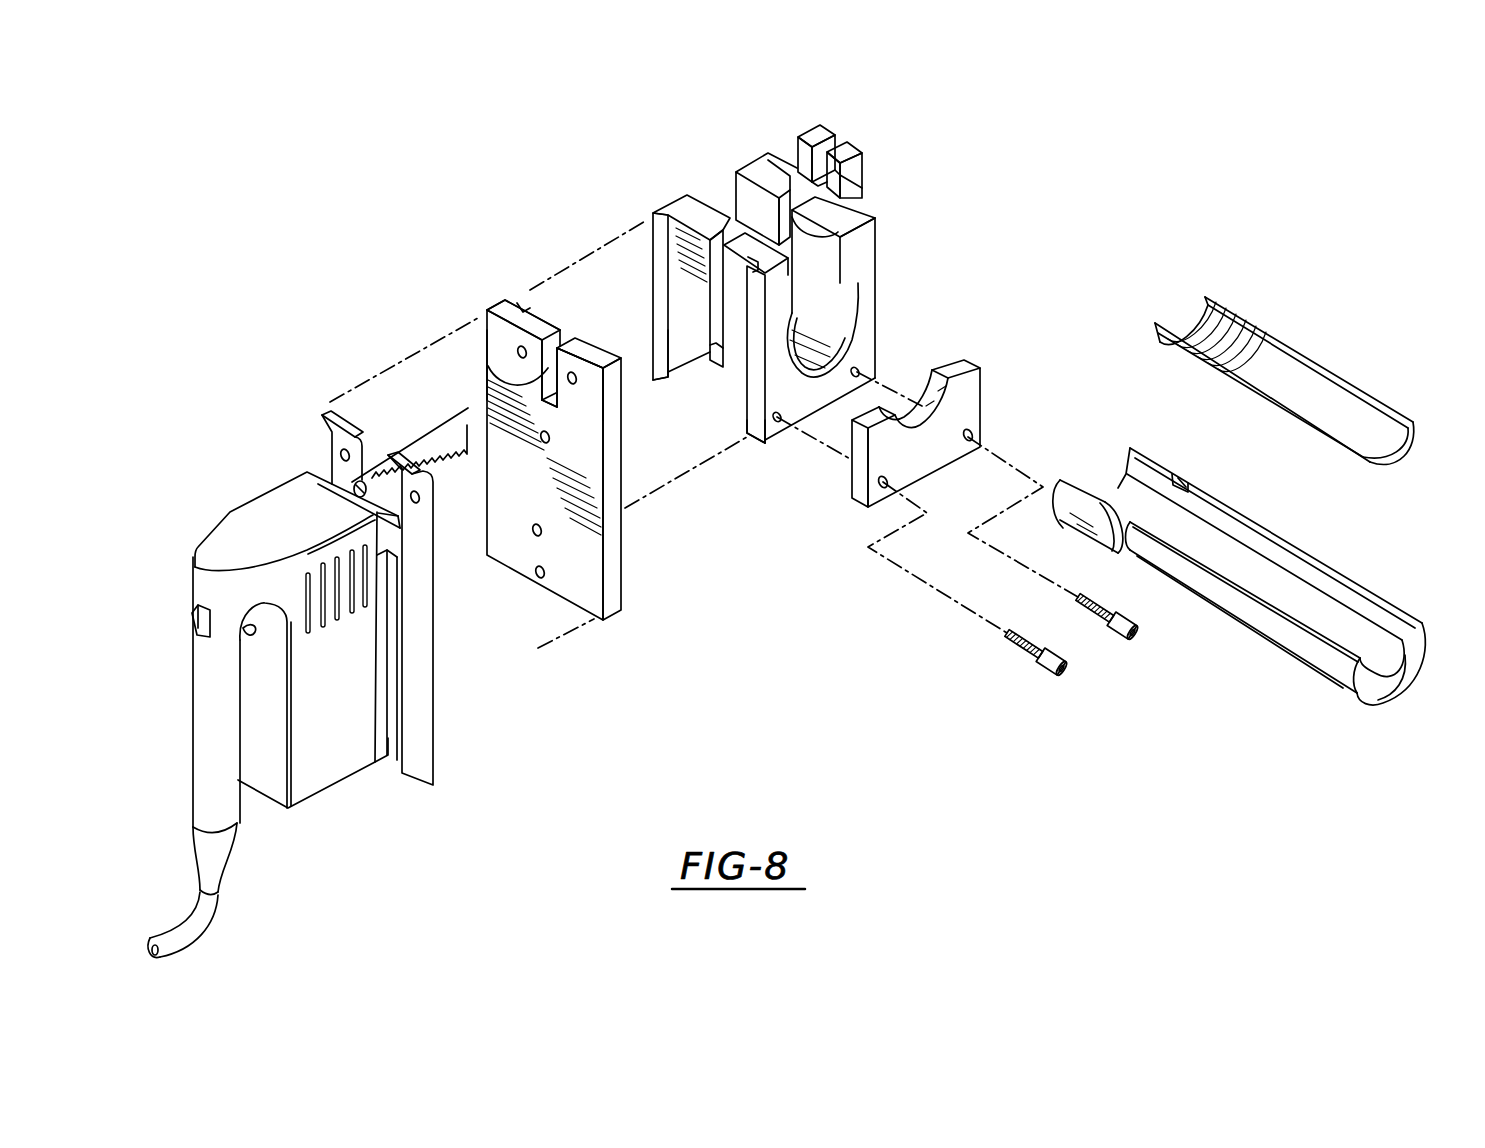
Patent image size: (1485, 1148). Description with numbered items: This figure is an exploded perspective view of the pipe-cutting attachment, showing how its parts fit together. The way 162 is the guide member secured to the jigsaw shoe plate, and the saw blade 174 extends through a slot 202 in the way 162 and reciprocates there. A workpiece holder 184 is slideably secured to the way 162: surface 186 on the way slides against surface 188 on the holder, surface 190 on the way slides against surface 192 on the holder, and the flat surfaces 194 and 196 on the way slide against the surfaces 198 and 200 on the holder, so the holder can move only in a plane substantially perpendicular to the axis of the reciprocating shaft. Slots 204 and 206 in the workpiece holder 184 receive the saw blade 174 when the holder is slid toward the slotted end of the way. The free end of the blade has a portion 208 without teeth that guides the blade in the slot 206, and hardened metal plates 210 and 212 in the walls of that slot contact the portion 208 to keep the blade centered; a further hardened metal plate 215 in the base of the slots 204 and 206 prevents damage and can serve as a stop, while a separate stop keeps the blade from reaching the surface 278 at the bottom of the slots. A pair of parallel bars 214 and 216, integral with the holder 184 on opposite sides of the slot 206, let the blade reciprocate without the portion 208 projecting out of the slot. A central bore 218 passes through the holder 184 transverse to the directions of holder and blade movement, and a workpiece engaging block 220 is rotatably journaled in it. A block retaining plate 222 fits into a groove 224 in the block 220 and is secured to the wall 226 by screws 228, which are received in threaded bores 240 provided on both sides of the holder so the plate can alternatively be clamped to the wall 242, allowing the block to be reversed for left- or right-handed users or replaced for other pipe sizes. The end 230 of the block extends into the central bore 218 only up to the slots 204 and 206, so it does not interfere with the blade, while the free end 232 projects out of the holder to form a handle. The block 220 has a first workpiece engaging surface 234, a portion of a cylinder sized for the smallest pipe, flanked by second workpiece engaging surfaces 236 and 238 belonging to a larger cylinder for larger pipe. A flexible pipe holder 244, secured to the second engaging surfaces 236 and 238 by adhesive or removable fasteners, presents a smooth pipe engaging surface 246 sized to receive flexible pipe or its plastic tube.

The way 162 is at (615, 600).
The saw blade 174 is at (440, 470).
The workpiece holder 184 is at (877, 243).
The surface 186 is at (517, 303).
The surface 188 is at (745, 300).
The surface 190 is at (612, 357).
The surface 192 is at (745, 395).
The flat surface 194 is at (505, 303).
The flat surface 196 is at (645, 382).
The surface 198 is at (672, 230).
The surface 200 is at (752, 432).
The slot 202 is at (488, 368).
The slot 204 is at (655, 252).
The slot 206 is at (870, 225).
The portion without teeth 208 is at (462, 412).
The hardened metal plate 210 is at (768, 168).
The hardened metal plate 212 is at (855, 195).
The parallel bar 214 is at (835, 137).
The hardened metal plate 215 is at (748, 282).
The parallel bar 216 is at (862, 153).
The central bore 218 is at (862, 305).
The workpiece engaging block 220 is at (1263, 635).
The block retaining plate 222 is at (985, 400).
The groove 224 is at (1188, 475).
The wall 226 is at (835, 290).
The screws 228 is at (1127, 645).
The end 230 is at (1117, 478).
The free end 232 is at (1367, 695).
The first workpiece engaging surface 234 is at (1257, 568).
The second workpiece engaging surface 236 is at (1373, 643).
The second workpiece engaging surface 238 is at (1343, 580).
The threaded bores 240 is at (962, 372).
The wall 242 is at (738, 167).
The flexible pipe holder 244 is at (1320, 358).
The smooth pipe engaging surface 246 is at (1352, 398).
The surface 278 is at (722, 352).